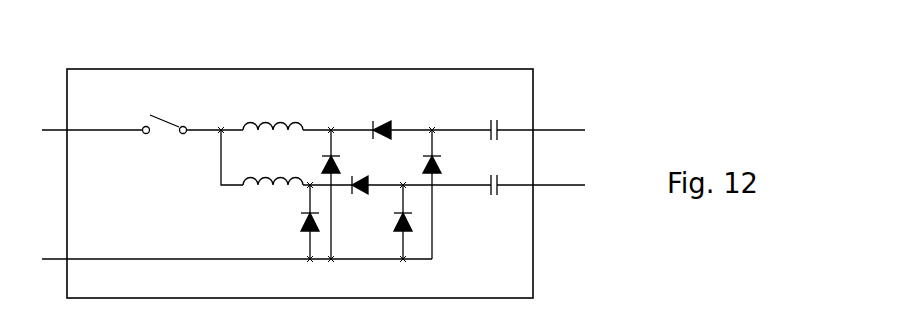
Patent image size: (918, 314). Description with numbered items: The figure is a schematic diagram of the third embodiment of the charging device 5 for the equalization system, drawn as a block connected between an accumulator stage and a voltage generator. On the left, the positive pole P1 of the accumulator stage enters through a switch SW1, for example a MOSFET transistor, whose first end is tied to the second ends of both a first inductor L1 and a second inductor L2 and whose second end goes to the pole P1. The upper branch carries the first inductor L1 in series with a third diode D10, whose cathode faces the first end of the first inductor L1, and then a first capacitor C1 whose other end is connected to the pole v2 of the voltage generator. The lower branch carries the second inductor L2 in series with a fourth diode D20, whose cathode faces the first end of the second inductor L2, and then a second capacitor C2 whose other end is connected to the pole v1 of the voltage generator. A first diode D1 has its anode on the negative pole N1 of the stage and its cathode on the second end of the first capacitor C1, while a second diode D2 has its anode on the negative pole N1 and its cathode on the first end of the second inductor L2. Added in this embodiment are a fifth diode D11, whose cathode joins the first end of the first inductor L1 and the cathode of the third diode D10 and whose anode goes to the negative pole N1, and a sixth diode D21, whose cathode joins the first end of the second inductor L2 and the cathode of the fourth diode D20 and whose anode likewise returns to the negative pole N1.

The charging device 5 is at (174, 69).
The positive pole of the accumulator stage P1 is at (76, 113).
The negative pole of the accumulator stage N1 is at (221, 243).
The switch SW1 is at (186, 115).
The first inductor L1 is at (308, 113).
The second inductor L2 is at (286, 157).
The third diode D10 is at (424, 117).
The fifth diode D11 is at (310, 194).
The fourth diode D20 is at (420, 176).
The sixth diode D21 is at (288, 222).
The first diode D1 is at (446, 194).
The second diode D2 is at (417, 222).
The first capacitor C1 is at (531, 117).
The second capacitor C2 is at (531, 204).
The pole of the voltage generator v1 is at (556, 215).
The pole of the voltage generator v2 is at (556, 110).